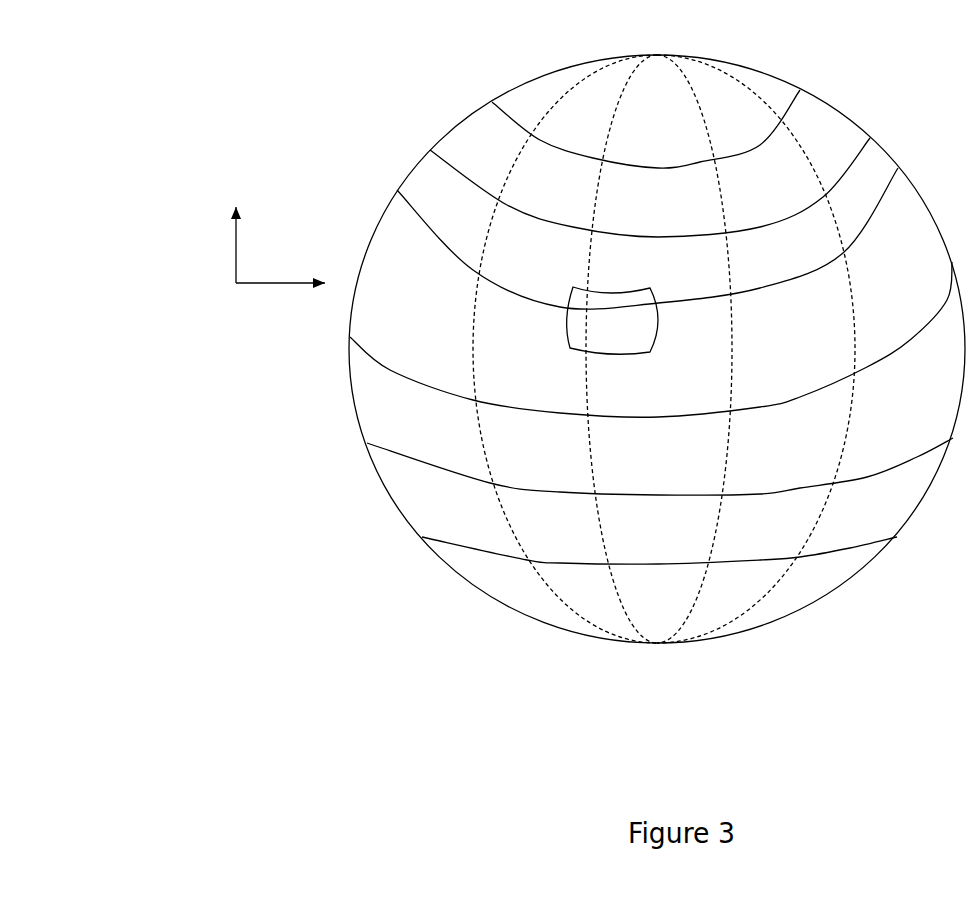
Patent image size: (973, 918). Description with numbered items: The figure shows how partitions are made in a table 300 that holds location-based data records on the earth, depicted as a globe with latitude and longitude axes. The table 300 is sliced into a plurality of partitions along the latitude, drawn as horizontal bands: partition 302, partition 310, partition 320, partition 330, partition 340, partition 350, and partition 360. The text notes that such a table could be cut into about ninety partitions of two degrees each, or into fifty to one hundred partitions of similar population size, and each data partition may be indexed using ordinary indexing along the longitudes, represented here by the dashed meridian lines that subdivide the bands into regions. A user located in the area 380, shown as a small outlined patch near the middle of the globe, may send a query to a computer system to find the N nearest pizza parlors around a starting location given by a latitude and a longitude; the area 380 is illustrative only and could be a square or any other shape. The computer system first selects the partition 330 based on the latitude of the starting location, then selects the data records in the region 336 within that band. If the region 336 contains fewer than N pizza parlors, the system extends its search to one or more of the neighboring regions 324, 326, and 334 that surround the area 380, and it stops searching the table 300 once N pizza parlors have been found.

The table 300 is at (233, 79).
The partition 302 is at (527, 67).
The partition 310 is at (450, 105).
The partition 320 is at (405, 158).
The partition 330 is at (348, 248).
The partition 340 is at (338, 395).
The partition 350 is at (382, 513).
The partition 360 is at (487, 604).
The neighboring region 324 is at (558, 270).
The neighboring region 326 is at (671, 275).
The neighboring region 334 is at (541, 363).
The region 336 is at (671, 386).
The area 380 is at (626, 335).